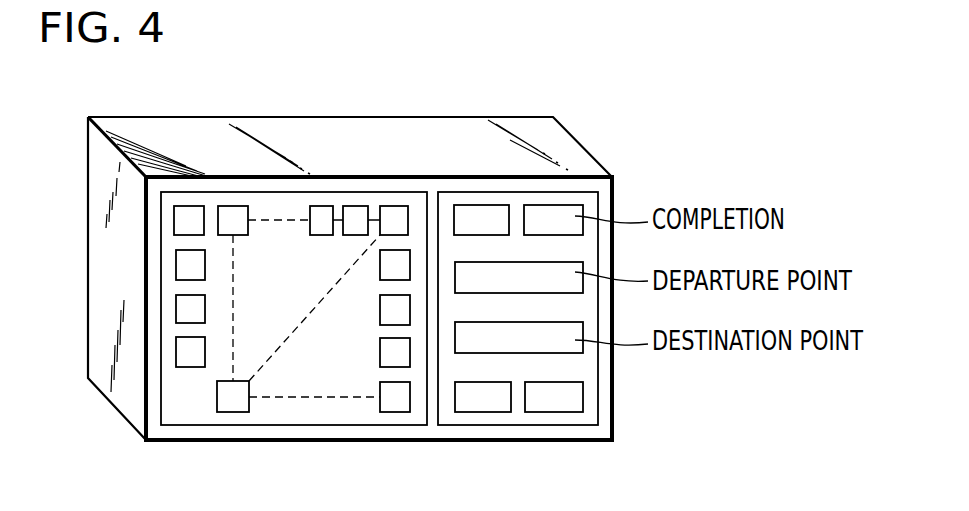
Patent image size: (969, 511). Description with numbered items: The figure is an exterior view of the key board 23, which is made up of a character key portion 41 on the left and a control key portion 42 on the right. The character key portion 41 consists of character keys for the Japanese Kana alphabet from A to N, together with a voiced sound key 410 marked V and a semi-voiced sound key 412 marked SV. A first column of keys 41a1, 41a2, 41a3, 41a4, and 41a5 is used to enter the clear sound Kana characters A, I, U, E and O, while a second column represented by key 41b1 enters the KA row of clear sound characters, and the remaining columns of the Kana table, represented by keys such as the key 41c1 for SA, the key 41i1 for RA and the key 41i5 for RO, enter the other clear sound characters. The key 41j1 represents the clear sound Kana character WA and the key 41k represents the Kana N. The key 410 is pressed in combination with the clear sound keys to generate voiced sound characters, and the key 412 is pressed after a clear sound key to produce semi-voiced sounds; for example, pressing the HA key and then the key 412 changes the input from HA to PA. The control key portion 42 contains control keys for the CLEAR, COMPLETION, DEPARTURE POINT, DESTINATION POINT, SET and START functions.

The key board 23 is at (596, 128).
The character key portion 41 is at (332, 425).
The control key portion 42 is at (521, 425).
The key 41a1 is at (396, 206).
The key 41a2 is at (380, 265).
The key 41a3 is at (380, 310).
The key 41a4 is at (380, 357).
The key 41a5 is at (398, 412).
The key 41b1 is at (355, 206).
The key 41c1 is at (316, 206).
The key 41i1 is at (221, 206).
The key 41i5 is at (237, 412).
The key 41j1 is at (174, 219).
The key 41k is at (176, 262).
The voiced sound key 410 is at (176, 310).
The semi-voiced sound key 412 is at (191, 367).